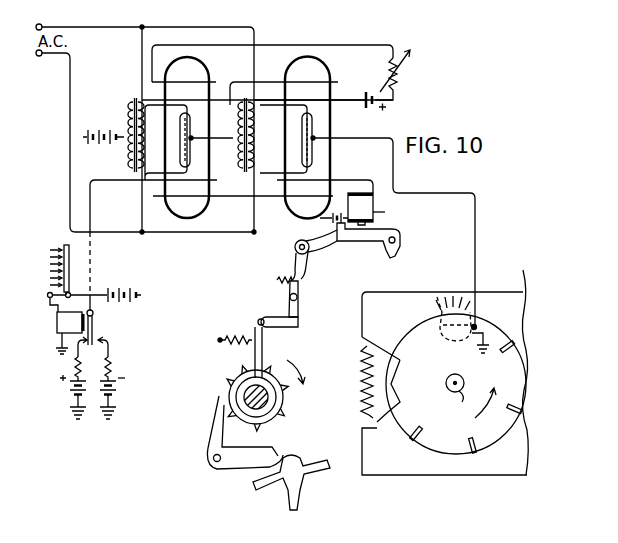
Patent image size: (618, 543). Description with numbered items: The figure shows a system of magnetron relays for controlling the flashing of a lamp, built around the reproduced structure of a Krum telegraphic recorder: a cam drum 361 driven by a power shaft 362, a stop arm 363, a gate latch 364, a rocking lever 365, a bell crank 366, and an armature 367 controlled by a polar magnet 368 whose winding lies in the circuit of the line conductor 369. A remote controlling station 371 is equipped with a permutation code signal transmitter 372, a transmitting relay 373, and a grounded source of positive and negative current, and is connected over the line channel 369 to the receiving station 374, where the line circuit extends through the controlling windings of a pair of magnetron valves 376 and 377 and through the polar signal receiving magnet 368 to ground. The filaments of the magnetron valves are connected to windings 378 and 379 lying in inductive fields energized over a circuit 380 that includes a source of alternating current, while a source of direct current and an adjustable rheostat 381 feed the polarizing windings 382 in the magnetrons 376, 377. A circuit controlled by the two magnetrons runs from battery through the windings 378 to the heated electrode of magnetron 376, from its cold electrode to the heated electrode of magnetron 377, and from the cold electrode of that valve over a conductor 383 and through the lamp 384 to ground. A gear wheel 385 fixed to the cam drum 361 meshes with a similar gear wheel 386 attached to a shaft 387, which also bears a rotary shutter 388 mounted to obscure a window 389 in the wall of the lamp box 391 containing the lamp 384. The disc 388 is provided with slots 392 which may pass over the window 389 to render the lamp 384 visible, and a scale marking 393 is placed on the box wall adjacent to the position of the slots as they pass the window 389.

The cam drum 361 is at (268, 424).
The power shaft 362 is at (272, 402).
The stop arm 363 is at (262, 352).
The gate latch 364 is at (286, 325).
The rocking lever 365 is at (299, 303).
The bell crank 366 is at (322, 250).
The armature 367 is at (364, 243).
The polar magnet 368 is at (360, 193).
The line conductor 369 is at (337, 190).
The remote controlling station 371 is at (99, 279).
The permutation code signal transmitter 372 is at (66, 245).
The transmitting relay 373 is at (60, 333).
The receiving station 374 is at (390, 129).
The magnetron tube 376 is at (193, 215).
The magnetron tube 377 is at (296, 211).
The winding 378 is at (124, 160).
The winding 379 is at (225, 167).
The circuit 380 is at (71, 97).
The adjustable rheostat 381 is at (408, 77).
The polarizing windings 382 is at (247, 158).
The conductor 383 is at (477, 228).
The lamp 384 is at (483, 312).
The gear wheel 385 is at (362, 417).
The gear wheel 386 is at (385, 418).
The shaft 387 is at (462, 396).
The rotary shutter 388 is at (447, 452).
The window 389 is at (437, 297).
The lamp box 391 is at (422, 476).
The slots 392 is at (524, 272).
The scale marking 393 is at (463, 297).